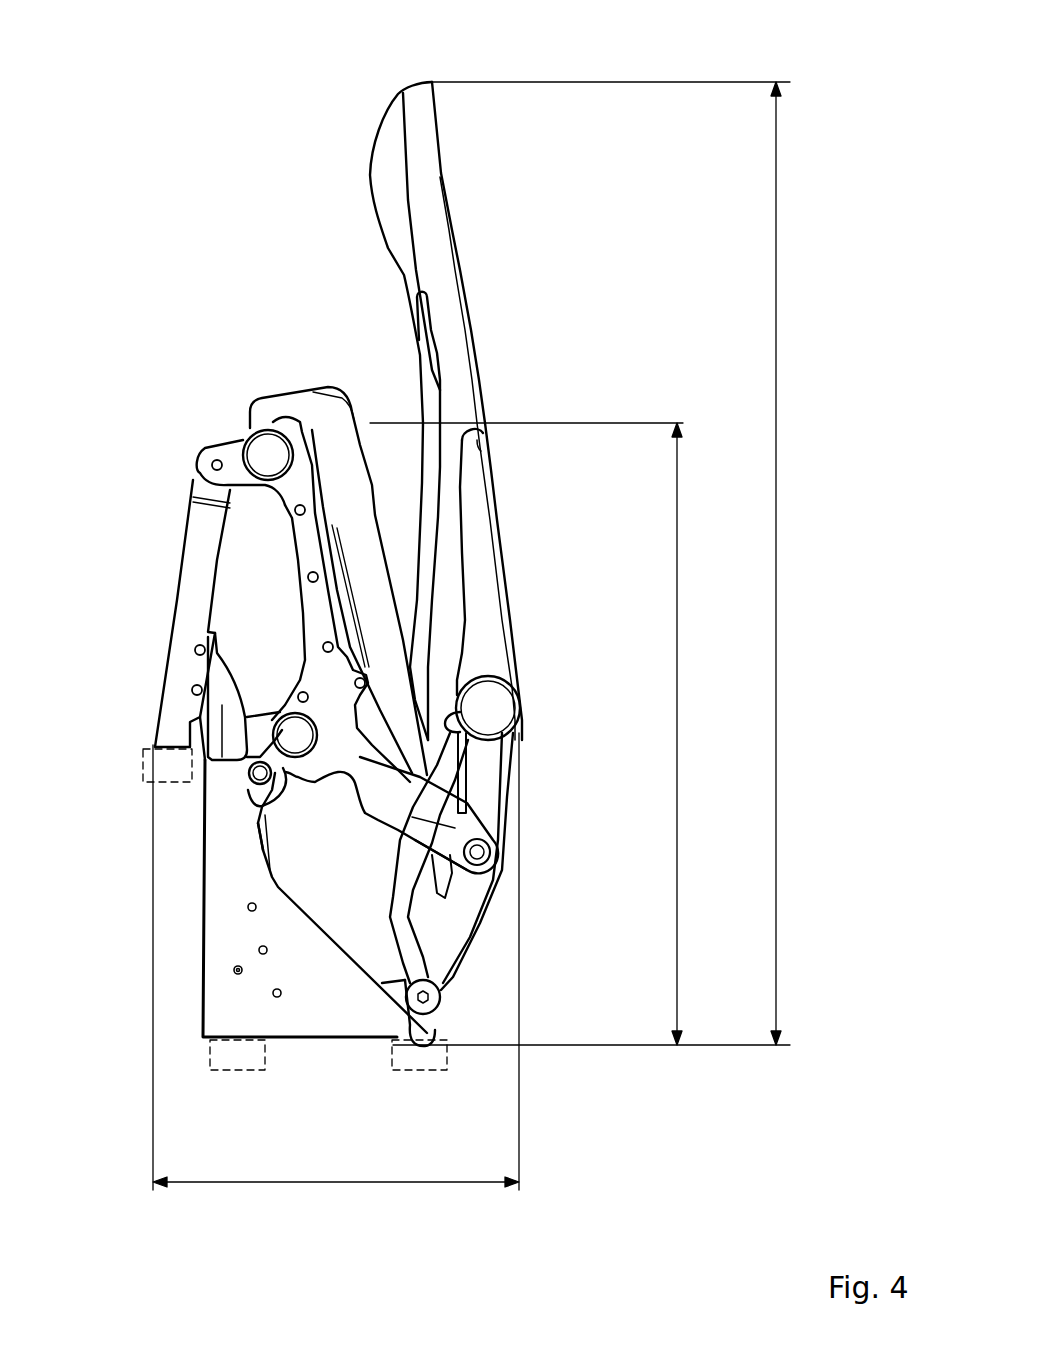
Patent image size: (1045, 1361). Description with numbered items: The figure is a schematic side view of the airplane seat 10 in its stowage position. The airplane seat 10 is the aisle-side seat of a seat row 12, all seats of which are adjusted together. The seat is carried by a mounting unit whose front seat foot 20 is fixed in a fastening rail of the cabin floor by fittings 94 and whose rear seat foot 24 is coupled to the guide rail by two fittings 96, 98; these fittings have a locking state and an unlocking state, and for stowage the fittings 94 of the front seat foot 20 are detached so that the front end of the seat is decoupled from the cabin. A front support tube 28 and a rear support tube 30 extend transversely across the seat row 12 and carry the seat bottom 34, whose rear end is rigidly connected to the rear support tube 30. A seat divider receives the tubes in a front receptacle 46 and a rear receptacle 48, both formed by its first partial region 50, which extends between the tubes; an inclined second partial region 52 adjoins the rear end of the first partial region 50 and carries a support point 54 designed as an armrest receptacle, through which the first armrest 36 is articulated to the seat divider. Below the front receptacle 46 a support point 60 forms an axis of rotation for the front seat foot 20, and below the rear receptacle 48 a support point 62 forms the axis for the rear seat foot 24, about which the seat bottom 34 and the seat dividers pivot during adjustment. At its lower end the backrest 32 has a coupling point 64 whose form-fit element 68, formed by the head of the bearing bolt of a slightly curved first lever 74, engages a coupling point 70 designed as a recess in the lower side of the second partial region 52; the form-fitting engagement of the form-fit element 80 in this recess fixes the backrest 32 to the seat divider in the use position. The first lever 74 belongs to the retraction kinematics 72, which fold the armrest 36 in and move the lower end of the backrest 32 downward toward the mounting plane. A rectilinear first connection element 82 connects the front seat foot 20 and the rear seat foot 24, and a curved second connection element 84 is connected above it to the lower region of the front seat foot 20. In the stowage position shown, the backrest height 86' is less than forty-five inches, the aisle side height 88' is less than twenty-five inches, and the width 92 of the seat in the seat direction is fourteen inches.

The airplane seat 10 is at (306, 177).
The seat row 12 is at (248, 142).
The front seat foot 20 is at (190, 625).
The rear seat foot 24 is at (232, 950).
The front support tube 28 is at (255, 455).
The rear support tube 30 is at (255, 735).
The backrest 32 is at (420, 330).
The seat bottom 34 is at (347, 485).
The first armrest 36 is at (480, 518).
The front receptacle 46 is at (268, 452).
The rear receptacle 48 is at (298, 760).
The first partial region 50 is at (320, 603).
The second partial region 52 is at (413, 815).
The support point 54 is at (492, 855).
The support point 60 is at (210, 466).
The support point 62 is at (250, 790).
The coupling point 64 is at (447, 1002).
The form-fit element 68 is at (425, 1003).
The coupling point 70 is at (338, 781).
The retraction kinematics 72 is at (403, 718).
The first lever 74 is at (413, 955).
The form-fit element 80 is at (380, 783).
The first connection element 82 is at (200, 757).
The second connection element 84 is at (220, 678).
The backrest height 86' is at (629, 563).
The aisle side height 88' is at (571, 734).
The width 92 is at (340, 1185).
The fittings 94 is at (140, 757).
The fitting 96 is at (243, 1053).
The fitting 98 is at (420, 1058).